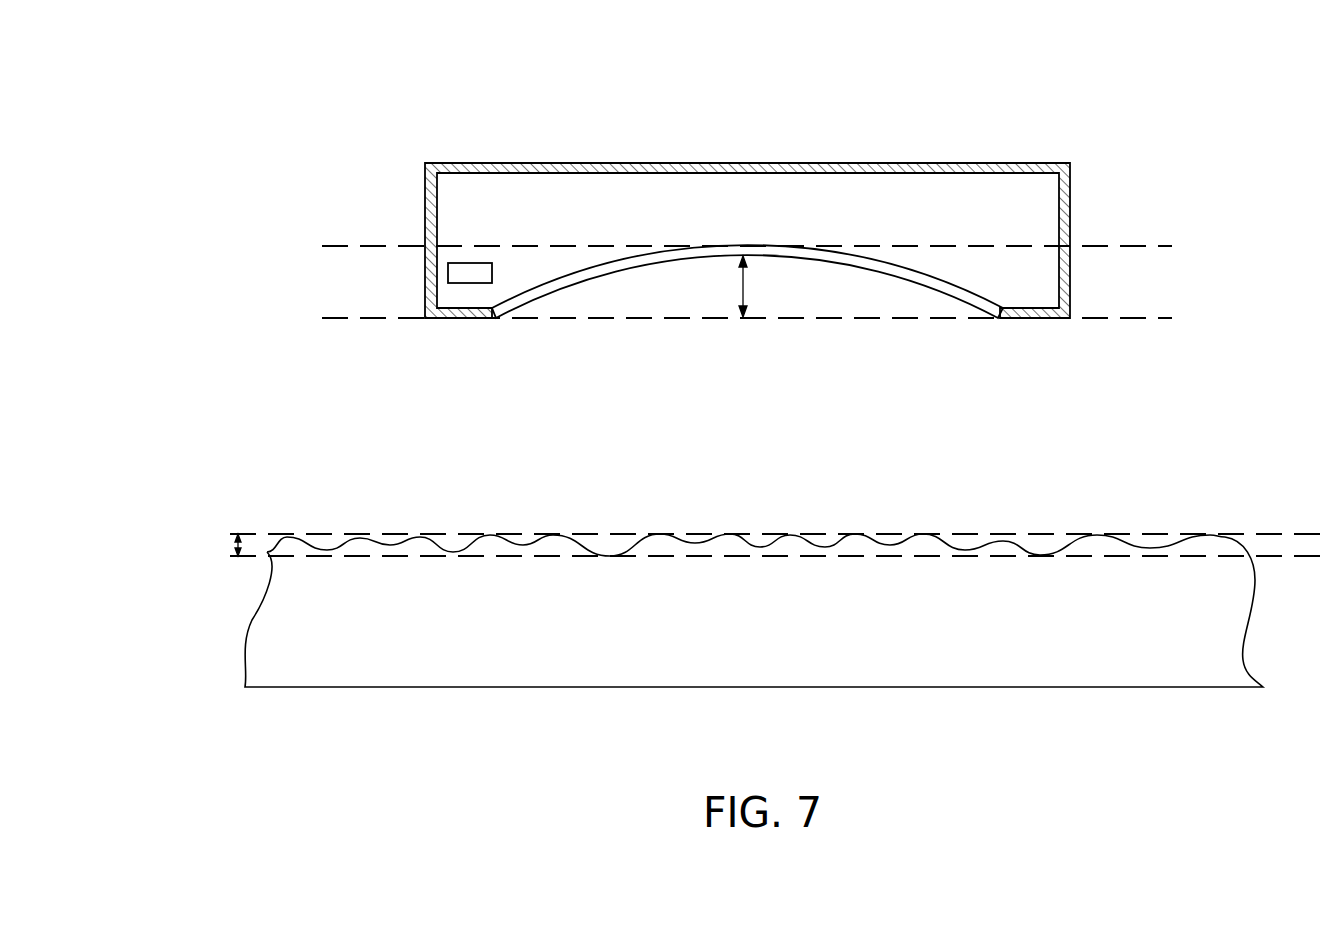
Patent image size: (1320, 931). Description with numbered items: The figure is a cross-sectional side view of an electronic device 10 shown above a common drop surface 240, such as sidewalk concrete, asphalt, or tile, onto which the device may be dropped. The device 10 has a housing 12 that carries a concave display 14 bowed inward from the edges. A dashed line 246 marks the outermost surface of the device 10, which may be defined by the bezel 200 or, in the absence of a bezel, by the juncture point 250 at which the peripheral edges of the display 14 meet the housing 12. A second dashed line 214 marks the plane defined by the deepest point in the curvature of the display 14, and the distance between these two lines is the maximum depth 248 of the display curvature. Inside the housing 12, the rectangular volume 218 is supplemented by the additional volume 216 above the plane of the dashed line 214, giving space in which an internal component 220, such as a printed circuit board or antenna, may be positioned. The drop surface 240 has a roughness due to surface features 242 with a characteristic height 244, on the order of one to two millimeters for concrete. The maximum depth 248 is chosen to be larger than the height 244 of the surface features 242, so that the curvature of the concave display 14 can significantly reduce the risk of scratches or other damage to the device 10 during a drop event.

The electronic device 10 is at (1024, 108).
The housing 12 is at (1065, 212).
The concave display 14 is at (957, 288).
The bezel 200 is at (1043, 312).
The dashed line 214 is at (750, 246).
The volume 216 is at (1037, 284).
The rectangular volume 218 is at (598, 195).
The component 220 is at (455, 272).
The drop surface 240 is at (1071, 663).
The surface features 242 is at (552, 529).
The height 244 is at (235, 544).
The dashed line 246 is at (721, 319).
The maximum depth 248 is at (768, 286).
The juncture point 250 is at (496, 318).